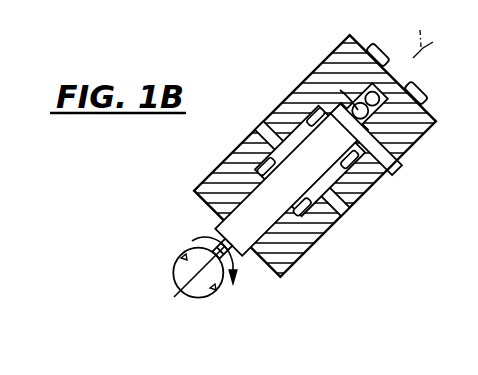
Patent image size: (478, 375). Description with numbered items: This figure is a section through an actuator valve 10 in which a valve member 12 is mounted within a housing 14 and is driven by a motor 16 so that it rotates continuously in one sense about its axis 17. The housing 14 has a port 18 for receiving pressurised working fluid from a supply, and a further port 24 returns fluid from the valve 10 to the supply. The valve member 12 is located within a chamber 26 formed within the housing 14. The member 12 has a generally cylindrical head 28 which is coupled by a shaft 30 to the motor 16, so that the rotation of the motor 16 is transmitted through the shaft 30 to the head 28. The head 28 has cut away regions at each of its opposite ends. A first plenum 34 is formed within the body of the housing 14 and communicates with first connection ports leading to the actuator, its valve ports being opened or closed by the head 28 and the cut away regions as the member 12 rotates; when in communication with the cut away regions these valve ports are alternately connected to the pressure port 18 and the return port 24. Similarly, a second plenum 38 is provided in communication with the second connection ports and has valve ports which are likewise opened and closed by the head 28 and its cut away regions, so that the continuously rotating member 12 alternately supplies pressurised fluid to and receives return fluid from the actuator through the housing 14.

The valve 10 is at (264, 106).
The valve member 12 is at (343, 213).
The housing 14 is at (340, 60).
The motor 16 is at (182, 268).
The axis 17 is at (420, 29).
The port 18 is at (385, 167).
The further port 24 is at (303, 243).
The chamber 26 is at (249, 136).
The head 28 is at (268, 172).
The shaft 30 is at (233, 226).
The plenum 34 is at (358, 110).
The second plenum 38 is at (378, 95).